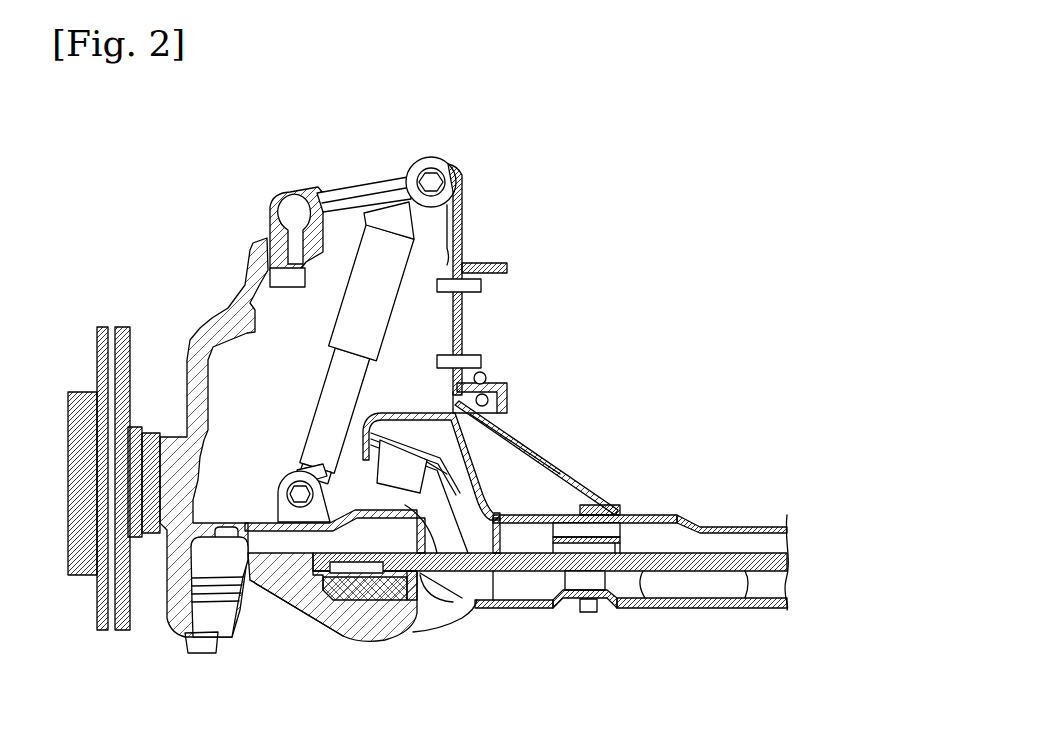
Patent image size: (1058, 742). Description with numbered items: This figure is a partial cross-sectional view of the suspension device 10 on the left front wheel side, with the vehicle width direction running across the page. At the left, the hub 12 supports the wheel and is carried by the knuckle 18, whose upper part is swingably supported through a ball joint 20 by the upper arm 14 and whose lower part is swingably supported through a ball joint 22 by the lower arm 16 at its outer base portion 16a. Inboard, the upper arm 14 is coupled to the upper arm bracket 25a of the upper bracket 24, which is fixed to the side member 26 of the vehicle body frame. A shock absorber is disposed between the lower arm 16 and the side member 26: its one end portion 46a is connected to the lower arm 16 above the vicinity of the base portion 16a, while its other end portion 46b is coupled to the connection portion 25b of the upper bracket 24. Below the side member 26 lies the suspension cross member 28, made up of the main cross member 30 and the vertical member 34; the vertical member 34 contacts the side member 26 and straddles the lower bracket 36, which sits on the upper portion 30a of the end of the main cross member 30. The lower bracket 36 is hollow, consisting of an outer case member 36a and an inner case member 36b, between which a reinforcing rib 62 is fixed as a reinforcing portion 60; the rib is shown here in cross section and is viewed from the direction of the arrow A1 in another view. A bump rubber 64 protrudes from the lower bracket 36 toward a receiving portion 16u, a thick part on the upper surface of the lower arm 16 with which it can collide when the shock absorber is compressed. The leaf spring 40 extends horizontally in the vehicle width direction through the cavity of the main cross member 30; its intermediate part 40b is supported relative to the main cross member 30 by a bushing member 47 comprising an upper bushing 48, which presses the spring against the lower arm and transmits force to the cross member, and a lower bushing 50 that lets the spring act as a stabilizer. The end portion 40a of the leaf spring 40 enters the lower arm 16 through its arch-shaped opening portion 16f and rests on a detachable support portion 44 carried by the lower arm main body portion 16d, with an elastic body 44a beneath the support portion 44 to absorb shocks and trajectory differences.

The suspension device 10 is at (641, 161).
The hub 12 is at (112, 302).
The upper arm 14 is at (348, 191).
The lower arm 16 is at (330, 638).
The base portion 16a is at (330, 520).
The lower arm main body portion 16d is at (386, 642).
The opening portion 16f is at (430, 580).
The receiving portion 16u is at (418, 512).
The knuckle 18 is at (212, 312).
The ball joint 20 is at (270, 204).
The ball joint 22 is at (222, 532).
The upper bracket 24 is at (448, 253).
The upper arm bracket 25a is at (450, 162).
The connection portion 25b is at (466, 213).
The side member 26 is at (470, 335).
The suspension cross member 28 is at (596, 650).
The main cross member 30 is at (692, 608).
The upper wall of tube 30a is at (700, 526).
The vertical member 34 is at (506, 410).
The lower bracket 36 is at (562, 464).
The outer case member 36a is at (535, 448).
The inner case member 36b is at (488, 512).
The leaf spring 40 is at (648, 606).
The end portion 40a is at (318, 632).
The intermediate part 40b is at (748, 590).
The support portion 44 is at (362, 604).
The elastic body 44a is at (345, 610).
The end portion 46a is at (292, 470).
The end portion 46b is at (364, 216).
The bushing member 47 is at (625, 528).
The upper bushing 48 is at (322, 358).
The lower bushing 50 is at (560, 604).
The reinforcing portion 60 is at (425, 416).
The reinforcing rib 62 is at (418, 430).
The bump rubber 64 is at (430, 470).
The arrow A1 is at (456, 434).